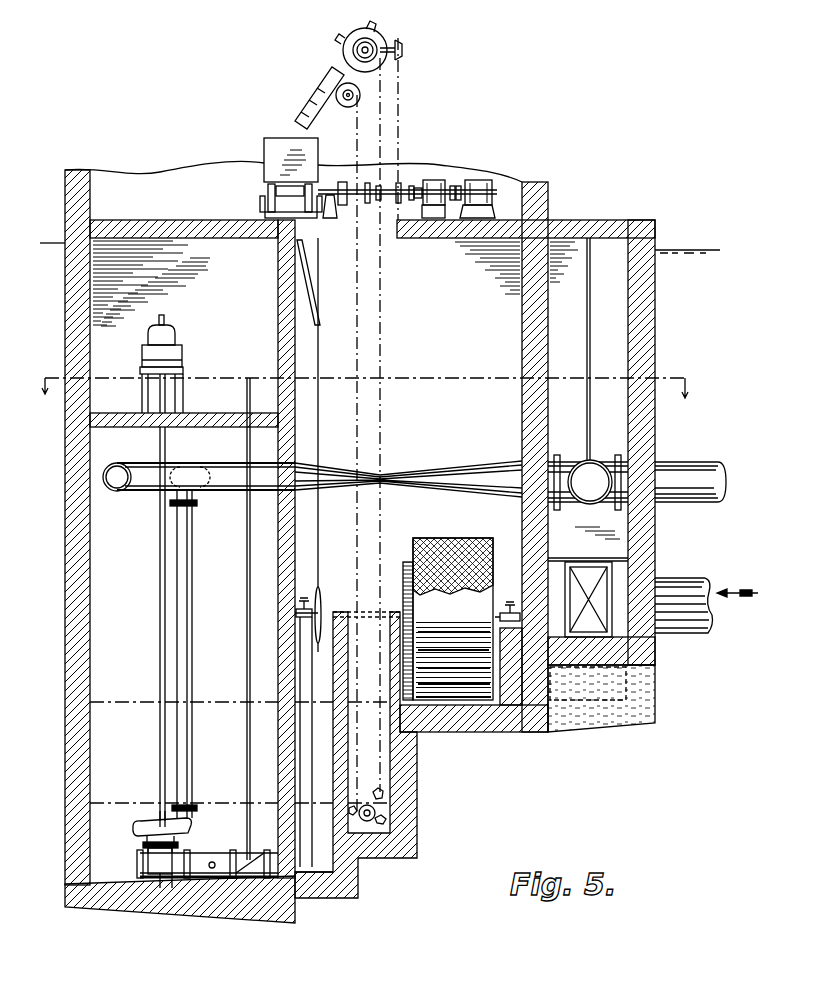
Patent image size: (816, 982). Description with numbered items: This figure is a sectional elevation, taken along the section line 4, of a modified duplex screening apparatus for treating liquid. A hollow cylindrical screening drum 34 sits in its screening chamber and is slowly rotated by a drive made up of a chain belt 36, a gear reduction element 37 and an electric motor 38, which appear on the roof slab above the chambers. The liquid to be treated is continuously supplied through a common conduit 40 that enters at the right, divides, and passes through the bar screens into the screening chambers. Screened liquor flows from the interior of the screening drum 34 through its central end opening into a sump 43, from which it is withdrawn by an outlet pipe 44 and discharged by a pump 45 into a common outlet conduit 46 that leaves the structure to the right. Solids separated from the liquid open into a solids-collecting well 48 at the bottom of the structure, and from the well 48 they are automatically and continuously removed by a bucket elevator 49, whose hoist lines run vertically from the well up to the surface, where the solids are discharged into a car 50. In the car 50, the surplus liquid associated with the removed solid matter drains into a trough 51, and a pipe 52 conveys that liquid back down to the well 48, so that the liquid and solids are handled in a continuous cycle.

The section line 4- 4 is at (362, 374).
The screening drum 34 is at (446, 529).
The chain belt 36 is at (318, 355).
The gear reduction element 37 is at (433, 185).
The electric motor 38 is at (476, 187).
The common conduit 40 is at (711, 636).
The sump 43 is at (323, 860).
The outlet pipe 44 is at (227, 868).
The pump 45 is at (160, 866).
The common outlet conduit 46 is at (702, 468).
The solids-collecting well 48 is at (387, 773).
The bucket elevator 49 is at (381, 350).
The car 50 is at (280, 150).
The trough 51 is at (277, 238).
The pipe 52 is at (303, 277).